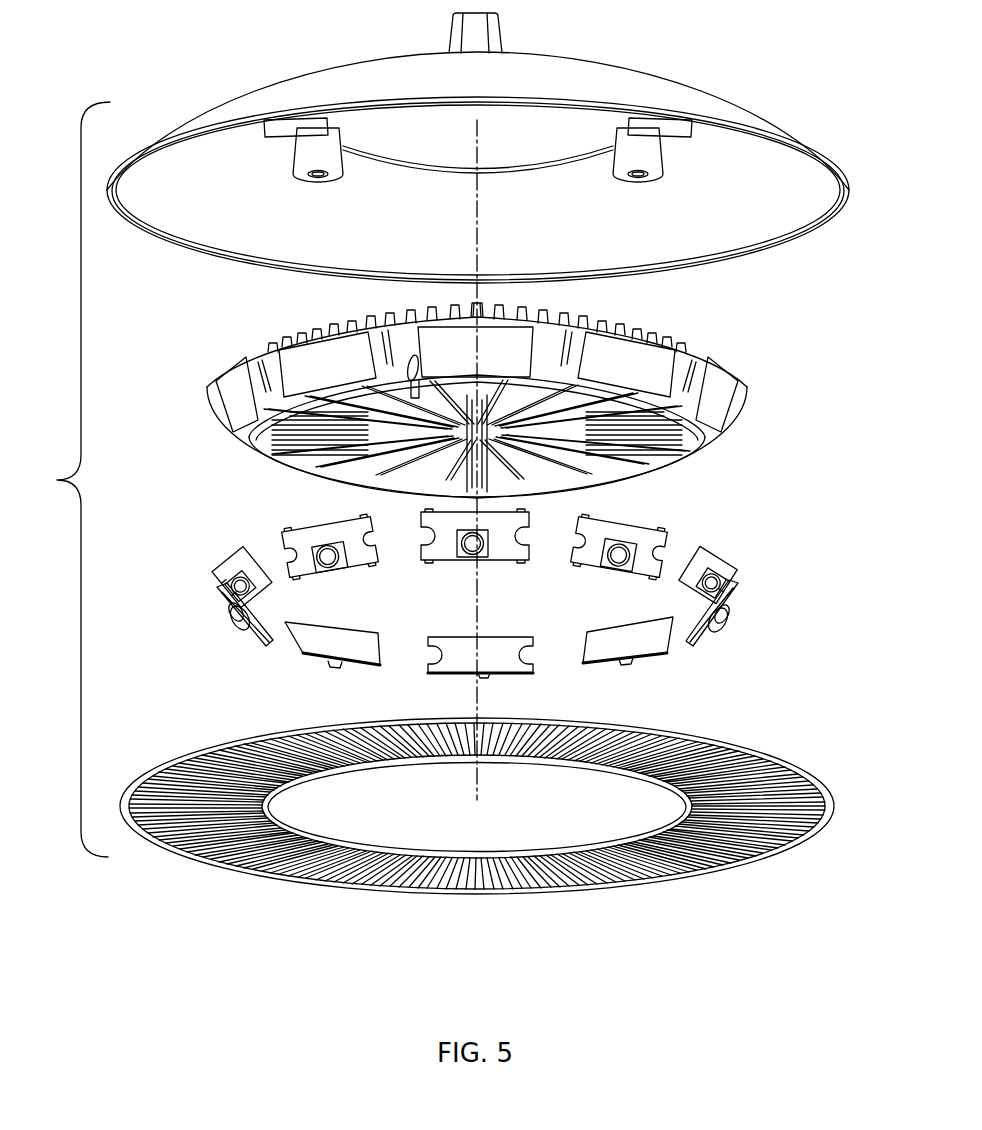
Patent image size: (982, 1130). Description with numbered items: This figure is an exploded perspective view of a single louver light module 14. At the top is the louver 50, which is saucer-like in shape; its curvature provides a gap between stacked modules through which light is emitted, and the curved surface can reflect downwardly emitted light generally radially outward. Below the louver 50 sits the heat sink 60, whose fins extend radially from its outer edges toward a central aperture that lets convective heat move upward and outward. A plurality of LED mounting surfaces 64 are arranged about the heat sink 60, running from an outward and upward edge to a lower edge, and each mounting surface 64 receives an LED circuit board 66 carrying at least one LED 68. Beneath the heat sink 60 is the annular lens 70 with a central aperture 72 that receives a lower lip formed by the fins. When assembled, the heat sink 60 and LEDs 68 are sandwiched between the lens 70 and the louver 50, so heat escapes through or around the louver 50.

The louver light module 14 is at (69, 479).
The louver 50 is at (770, 80).
The heat sink 60 is at (772, 347).
The LED mounting surface 64 is at (462, 362).
The LED circuit board 66 is at (229, 560).
The LED 68 is at (226, 581).
The lens 70 is at (787, 742).
The central aperture 72 is at (363, 890).